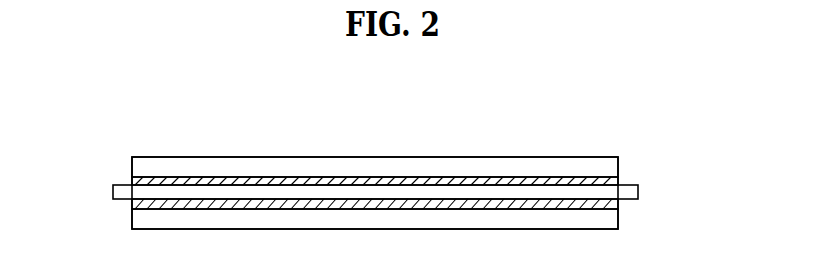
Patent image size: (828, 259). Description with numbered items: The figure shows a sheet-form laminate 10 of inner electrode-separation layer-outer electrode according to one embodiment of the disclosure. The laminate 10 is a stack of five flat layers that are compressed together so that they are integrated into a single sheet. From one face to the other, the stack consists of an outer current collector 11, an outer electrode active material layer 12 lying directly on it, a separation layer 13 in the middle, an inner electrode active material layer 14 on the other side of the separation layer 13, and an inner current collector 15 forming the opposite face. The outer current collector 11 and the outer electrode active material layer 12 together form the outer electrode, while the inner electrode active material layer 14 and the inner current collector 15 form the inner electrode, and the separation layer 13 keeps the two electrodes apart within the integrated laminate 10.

The laminate of inner electrode-separation layer-outer electrode 10 is at (549, 128).
The outer current collector 11 is at (618, 165).
The outer electrode active material layer 12 is at (618, 183).
The separation layer 13 is at (638, 193).
The inner electrode active material layer 14 is at (618, 204).
The inner current collector 15 is at (618, 220).